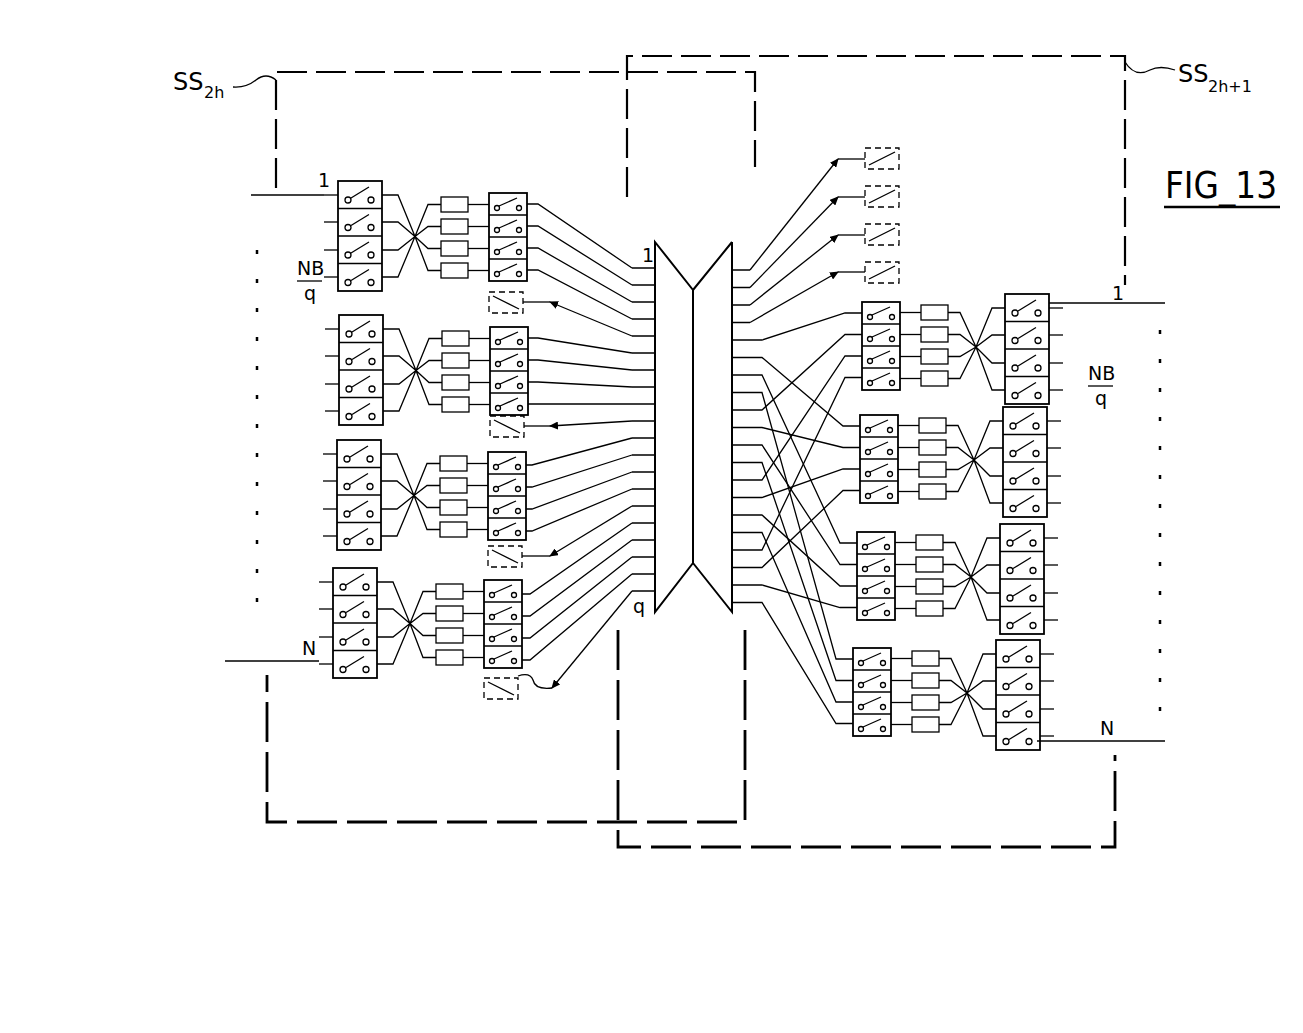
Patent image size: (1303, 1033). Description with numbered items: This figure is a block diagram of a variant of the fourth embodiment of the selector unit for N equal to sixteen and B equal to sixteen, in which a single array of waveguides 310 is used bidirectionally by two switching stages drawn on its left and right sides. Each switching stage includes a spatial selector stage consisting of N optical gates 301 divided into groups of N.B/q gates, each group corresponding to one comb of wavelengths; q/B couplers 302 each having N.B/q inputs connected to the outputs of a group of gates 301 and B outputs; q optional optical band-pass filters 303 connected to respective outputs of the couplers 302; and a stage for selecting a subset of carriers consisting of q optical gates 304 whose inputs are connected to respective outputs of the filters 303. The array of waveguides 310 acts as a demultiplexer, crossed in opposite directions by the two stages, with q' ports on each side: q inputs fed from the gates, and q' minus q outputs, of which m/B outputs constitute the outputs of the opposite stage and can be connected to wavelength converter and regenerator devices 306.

The optical gates 301 is at (1024, 782).
The couplers 302 is at (1000, 799).
The optical band-pass filters 303 is at (456, 197).
The optical gates 304 is at (520, 193).
The wavelength converter and regenerator devices 306 is at (1056, 136).
The array of waveguides 310 is at (672, 262).